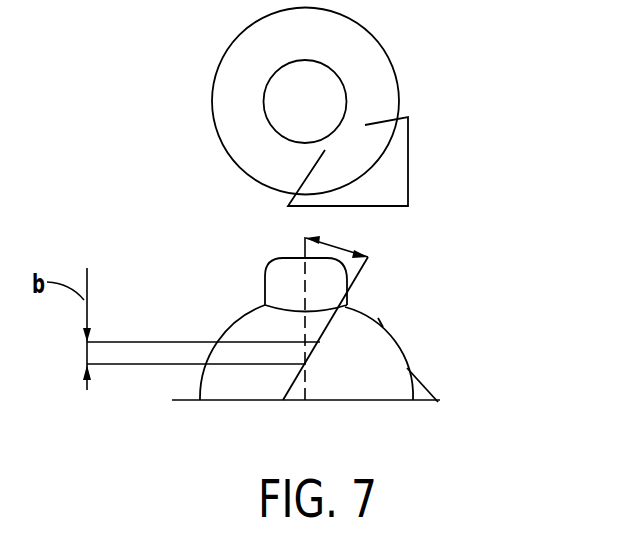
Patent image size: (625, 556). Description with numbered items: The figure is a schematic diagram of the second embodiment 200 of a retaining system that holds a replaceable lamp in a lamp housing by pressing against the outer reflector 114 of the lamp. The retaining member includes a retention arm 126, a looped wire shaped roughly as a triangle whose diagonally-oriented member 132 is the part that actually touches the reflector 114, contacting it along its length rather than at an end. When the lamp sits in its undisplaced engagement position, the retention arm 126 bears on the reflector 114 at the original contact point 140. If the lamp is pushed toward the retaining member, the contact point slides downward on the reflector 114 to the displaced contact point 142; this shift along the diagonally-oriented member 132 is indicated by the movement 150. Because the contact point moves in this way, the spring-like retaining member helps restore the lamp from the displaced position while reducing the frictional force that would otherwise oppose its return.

The reflector 114 is at (225, 332).
The retention arm 126 is at (315, 341).
The diagonally-oriented member 132 is at (325, 332).
The original contact point 140 is at (315, 341).
The displaced contact point 142 is at (298, 367).
The movement 150 is at (342, 243).
The second embodiment 200 is at (490, 228).